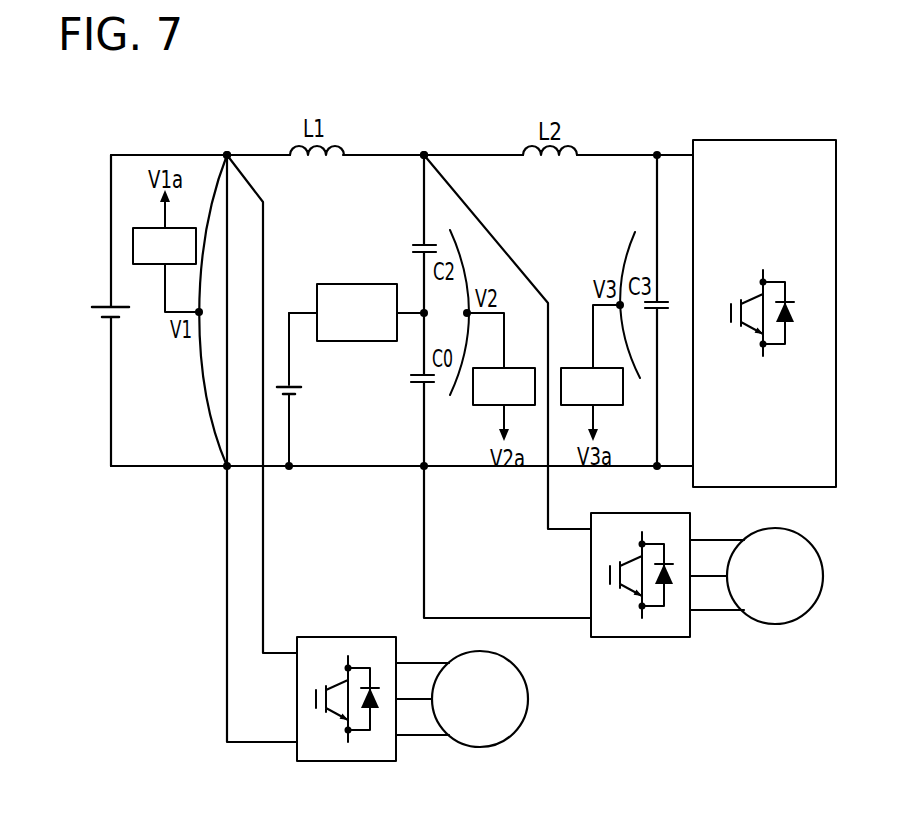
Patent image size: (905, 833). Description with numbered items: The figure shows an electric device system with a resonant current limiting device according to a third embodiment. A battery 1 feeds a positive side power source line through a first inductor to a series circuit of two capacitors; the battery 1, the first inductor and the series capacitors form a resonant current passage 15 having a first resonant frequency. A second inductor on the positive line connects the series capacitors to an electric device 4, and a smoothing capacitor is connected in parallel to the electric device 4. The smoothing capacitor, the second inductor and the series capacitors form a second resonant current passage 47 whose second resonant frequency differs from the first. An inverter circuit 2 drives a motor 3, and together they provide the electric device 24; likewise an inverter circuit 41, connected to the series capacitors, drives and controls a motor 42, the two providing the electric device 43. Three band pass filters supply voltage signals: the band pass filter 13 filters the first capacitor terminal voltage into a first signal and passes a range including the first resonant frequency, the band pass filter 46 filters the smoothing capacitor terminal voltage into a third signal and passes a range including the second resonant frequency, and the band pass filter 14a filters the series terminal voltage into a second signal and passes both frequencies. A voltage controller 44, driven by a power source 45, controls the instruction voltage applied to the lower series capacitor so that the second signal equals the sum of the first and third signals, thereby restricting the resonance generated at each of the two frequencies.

The battery 1 is at (95, 312).
The inverter circuit 2 is at (358, 761).
The motor 3 is at (514, 735).
The electric device 4 is at (771, 140).
The band pass filter 13 is at (150, 228).
The band pass filter 14a is at (482, 405).
The resonant current passage 15 is at (245, 128).
The electric device 24 is at (371, 731).
The inverter circuit 41 is at (662, 638).
The motor 42 is at (809, 612).
The electric device 43 is at (709, 628).
The voltage controller 44 is at (378, 341).
The power source 45 is at (303, 390).
The band pass filter 46 is at (613, 405).
The resonant current passage 47 is at (457, 135).